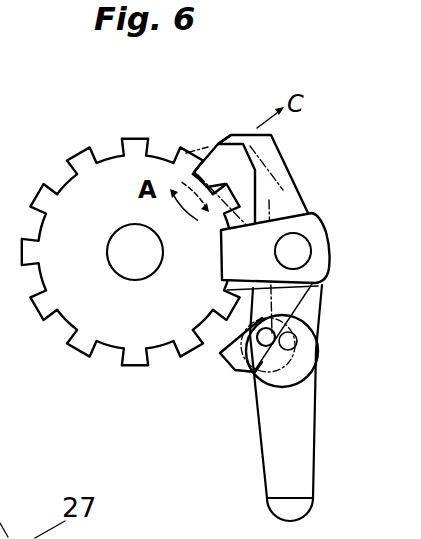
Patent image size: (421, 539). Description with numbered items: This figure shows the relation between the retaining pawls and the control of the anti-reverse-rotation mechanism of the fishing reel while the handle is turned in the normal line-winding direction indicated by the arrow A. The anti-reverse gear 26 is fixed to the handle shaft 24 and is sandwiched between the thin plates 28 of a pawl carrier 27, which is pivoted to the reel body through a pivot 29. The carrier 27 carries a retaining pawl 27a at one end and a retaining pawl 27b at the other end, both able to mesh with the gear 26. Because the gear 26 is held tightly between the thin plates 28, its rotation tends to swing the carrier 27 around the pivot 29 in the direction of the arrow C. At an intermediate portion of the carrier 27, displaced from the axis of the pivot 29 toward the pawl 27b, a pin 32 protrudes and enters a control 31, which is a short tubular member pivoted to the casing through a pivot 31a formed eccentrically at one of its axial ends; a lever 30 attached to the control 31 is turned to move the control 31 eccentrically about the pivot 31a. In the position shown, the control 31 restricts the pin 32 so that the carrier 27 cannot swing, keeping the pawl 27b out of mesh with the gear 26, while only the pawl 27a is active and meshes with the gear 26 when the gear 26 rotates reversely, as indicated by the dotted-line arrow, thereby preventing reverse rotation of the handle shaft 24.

The handle shaft 24 is at (130, 268).
The anti-reverse gear 26 is at (157, 338).
The pawl carrier 27 is at (257, 251).
The retaining pawl 27a is at (229, 136).
The retaining pawl 27b is at (232, 354).
The thin plates 28 is at (297, 228).
The pivot 29 is at (298, 249).
The lever 30 is at (311, 455).
The control 31 is at (312, 363).
The pivot 31a is at (258, 365).
The pin 32 is at (278, 330).